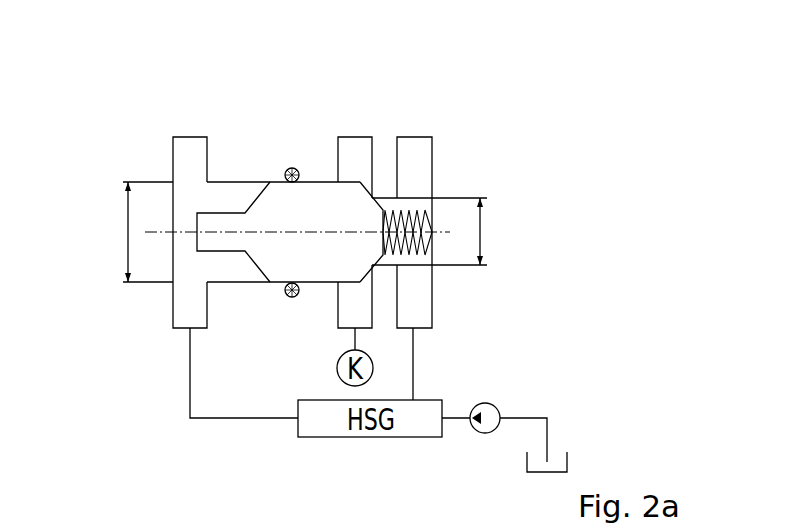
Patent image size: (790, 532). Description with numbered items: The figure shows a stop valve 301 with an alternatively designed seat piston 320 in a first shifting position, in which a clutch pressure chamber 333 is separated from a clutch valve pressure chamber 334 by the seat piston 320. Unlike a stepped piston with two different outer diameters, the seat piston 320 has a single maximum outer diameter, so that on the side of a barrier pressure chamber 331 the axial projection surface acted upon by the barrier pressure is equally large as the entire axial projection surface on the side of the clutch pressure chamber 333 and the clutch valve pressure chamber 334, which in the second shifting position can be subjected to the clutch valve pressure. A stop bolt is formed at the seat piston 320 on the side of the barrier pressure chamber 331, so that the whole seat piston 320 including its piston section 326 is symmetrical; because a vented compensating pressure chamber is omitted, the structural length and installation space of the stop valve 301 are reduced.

The stop valve 301 is at (143, 130).
The seat piston 320 is at (322, 205).
The piston section 326 is at (378, 263).
The barrier pressure chamber 331 is at (193, 155).
The clutch pressure chamber 333 is at (357, 153).
The clutch valve pressure chamber 334 is at (413, 153).